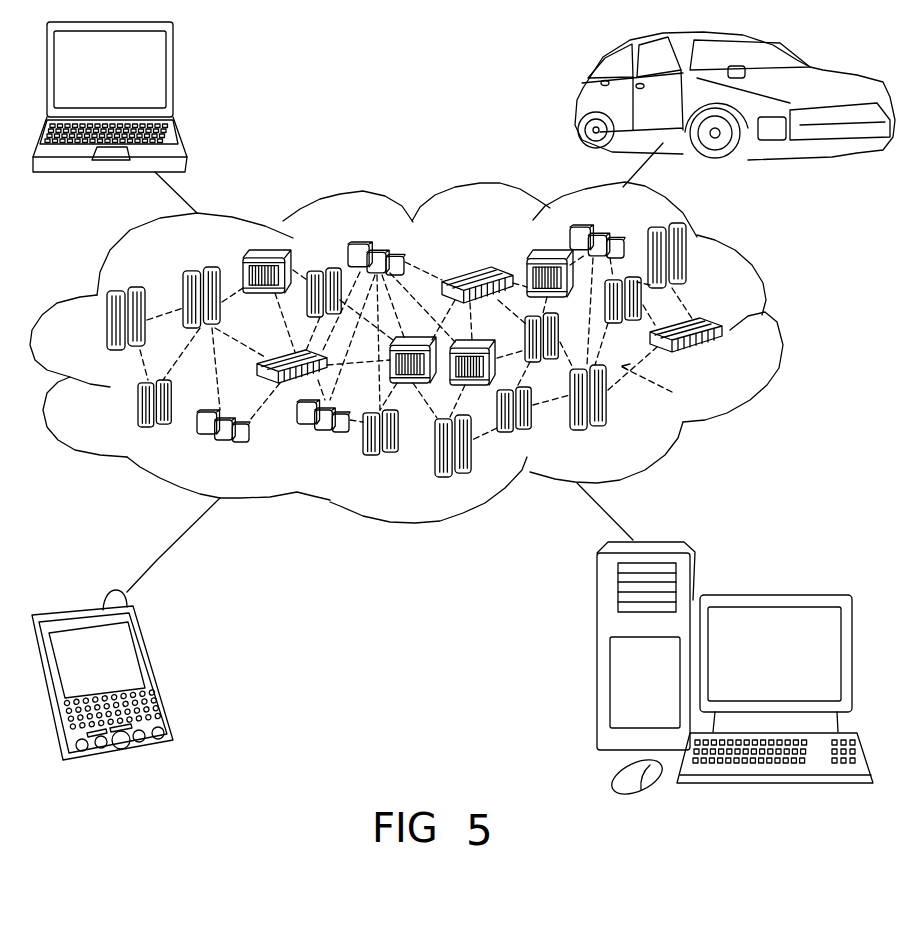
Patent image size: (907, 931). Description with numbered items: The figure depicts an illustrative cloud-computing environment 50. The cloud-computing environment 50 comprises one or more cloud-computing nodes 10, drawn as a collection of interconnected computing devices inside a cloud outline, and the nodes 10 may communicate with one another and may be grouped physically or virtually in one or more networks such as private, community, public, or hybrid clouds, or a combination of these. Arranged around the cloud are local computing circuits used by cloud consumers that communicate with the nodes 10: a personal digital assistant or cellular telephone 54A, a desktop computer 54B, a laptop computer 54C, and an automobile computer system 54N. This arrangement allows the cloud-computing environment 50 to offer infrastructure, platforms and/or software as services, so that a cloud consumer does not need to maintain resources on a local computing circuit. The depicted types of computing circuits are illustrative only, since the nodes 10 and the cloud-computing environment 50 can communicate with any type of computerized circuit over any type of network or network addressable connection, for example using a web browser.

The cloud-computing node 10 is at (722, 359).
The cloud-computing environment 50 is at (430, 352).
The personal digital assistant (PDA) or cellular telephone 54A is at (148, 672).
The desktop computer 54B is at (772, 595).
The laptop computer 54C is at (173, 78).
The automobile computer system 54N is at (578, 97).